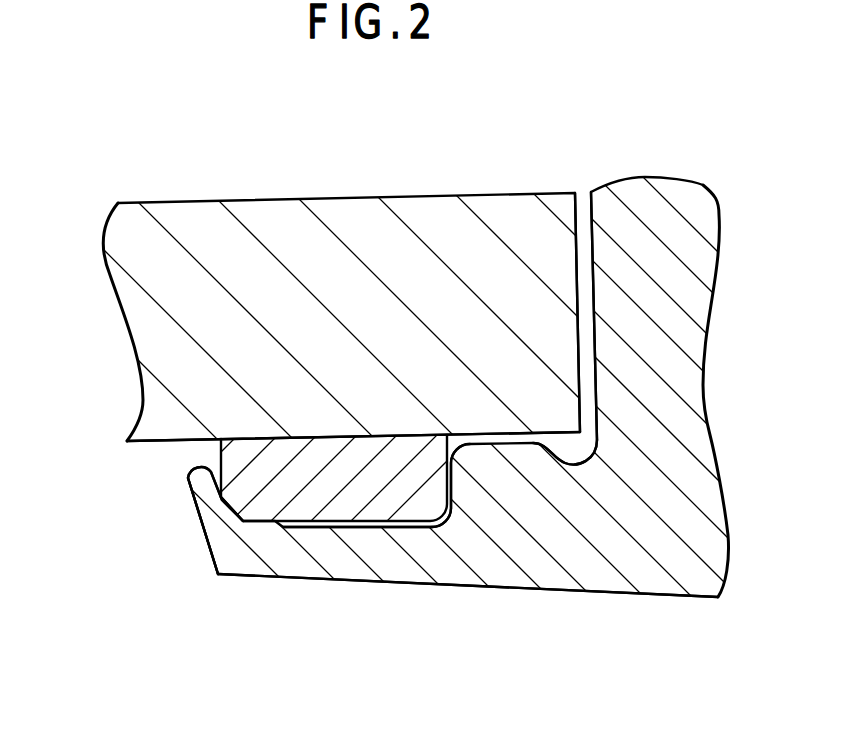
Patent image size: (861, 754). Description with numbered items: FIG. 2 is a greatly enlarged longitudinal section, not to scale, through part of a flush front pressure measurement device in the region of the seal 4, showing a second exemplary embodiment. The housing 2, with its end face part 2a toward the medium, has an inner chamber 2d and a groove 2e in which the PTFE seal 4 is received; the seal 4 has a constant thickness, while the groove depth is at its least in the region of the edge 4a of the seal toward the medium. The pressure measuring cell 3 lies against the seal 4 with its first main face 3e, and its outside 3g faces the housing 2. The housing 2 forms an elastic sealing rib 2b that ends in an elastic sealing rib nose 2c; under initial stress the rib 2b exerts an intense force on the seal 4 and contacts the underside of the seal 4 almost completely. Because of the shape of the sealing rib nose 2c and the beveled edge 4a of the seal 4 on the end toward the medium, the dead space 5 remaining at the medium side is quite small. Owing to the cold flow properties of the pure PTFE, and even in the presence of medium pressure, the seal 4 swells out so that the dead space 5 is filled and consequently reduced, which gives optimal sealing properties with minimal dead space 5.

The housing 2 is at (687, 566).
The end face part of the housing 2a is at (650, 600).
The elastic sealing rib 2b is at (287, 553).
The elastic sealing rib nose 2c is at (213, 548).
The inner chamber 2d is at (577, 446).
The groove 2e is at (383, 527).
The pressure measuring cell 3 is at (132, 255).
The first main face 3e is at (233, 448).
The outside 3g is at (580, 350).
The seal 4 is at (217, 458).
The edge toward the medium 4a is at (222, 515).
The dead space 5 is at (195, 493).